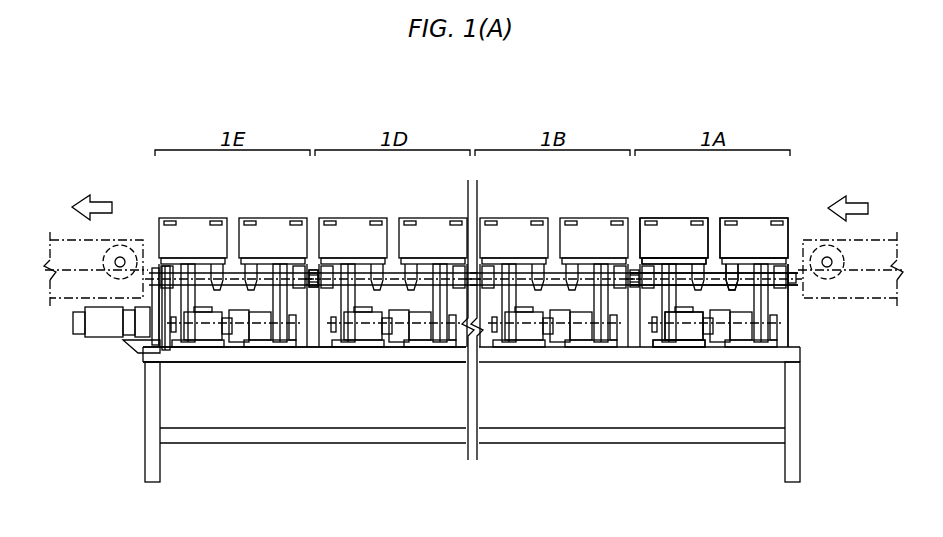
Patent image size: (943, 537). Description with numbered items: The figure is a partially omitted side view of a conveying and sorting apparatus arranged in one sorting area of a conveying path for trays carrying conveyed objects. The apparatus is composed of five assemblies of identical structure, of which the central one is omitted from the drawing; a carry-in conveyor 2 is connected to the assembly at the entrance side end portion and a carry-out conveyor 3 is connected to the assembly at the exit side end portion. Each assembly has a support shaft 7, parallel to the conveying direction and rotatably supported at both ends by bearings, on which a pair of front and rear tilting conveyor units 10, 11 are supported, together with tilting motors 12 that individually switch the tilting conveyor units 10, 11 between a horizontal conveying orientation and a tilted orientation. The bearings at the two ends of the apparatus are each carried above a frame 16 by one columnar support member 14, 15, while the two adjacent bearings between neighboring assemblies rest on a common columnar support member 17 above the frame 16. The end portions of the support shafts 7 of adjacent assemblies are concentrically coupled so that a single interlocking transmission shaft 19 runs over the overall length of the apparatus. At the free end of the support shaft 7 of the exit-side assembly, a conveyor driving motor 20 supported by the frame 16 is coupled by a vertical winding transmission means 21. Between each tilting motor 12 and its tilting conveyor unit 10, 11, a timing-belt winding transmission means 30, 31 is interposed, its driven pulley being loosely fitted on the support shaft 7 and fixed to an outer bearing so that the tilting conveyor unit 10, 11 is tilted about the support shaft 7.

The carry-in conveyor 2 is at (877, 234).
The carry-out conveyor 3 is at (68, 234).
The support shaft 7 is at (233, 268).
The tilting conveyor unit 10 is at (277, 213).
The tilting conveyor unit 11 is at (199, 213).
The tilting motor 12 is at (240, 334).
The columnar support member 14 is at (789, 332).
The columnar support member 15 is at (163, 345).
The frame 16 is at (297, 357).
The columnar support member 17 is at (312, 338).
The interlocking transmission shaft 19 is at (385, 290).
The conveyor driving motor 20 is at (107, 328).
The vertical winding transmission means 21 is at (146, 297).
The winding transmission means 30 is at (266, 302).
The winding transmission means 31 is at (183, 254).